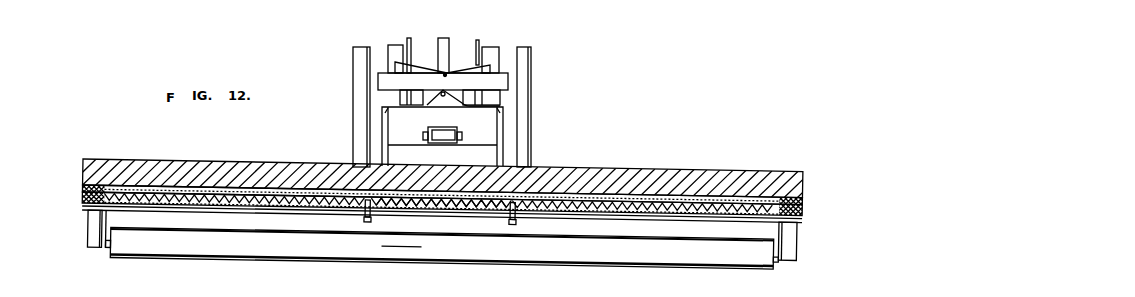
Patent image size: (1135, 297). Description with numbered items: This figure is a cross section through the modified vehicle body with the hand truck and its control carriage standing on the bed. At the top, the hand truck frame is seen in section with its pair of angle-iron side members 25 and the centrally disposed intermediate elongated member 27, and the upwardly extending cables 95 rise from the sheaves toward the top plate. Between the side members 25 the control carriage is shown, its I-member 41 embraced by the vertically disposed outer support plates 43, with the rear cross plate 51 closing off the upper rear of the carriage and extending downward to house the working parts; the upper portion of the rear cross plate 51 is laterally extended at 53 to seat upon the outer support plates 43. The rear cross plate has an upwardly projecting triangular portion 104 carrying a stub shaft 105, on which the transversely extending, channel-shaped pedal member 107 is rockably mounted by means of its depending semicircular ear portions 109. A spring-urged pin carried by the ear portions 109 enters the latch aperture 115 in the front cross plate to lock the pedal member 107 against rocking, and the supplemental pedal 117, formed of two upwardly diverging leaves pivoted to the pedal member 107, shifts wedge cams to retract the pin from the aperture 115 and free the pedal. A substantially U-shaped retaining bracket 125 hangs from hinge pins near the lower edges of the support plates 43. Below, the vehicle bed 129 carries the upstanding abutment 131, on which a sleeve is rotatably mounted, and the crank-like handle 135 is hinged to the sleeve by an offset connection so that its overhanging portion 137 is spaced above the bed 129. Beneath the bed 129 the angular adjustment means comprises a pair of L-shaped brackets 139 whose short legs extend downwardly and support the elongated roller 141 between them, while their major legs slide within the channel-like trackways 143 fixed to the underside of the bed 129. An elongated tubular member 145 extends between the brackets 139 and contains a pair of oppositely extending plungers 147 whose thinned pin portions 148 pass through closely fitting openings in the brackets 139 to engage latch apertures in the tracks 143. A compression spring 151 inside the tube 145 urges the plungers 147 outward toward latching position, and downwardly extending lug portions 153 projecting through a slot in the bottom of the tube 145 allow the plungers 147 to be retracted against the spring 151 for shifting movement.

The side members 25 is at (361, 60).
The intermediate elongated member 27 is at (444, 38).
The I-member 41 is at (396, 45).
The outer support plates 43 is at (387, 141).
The rear cross plate 51 is at (500, 116).
The laterally extended portion 53 is at (389, 115).
The upwardly extending cables 95 is at (410, 38).
The triangular portion 104 is at (432, 104).
The stub shaft 105 is at (445, 92).
The pedal member 107 is at (387, 80).
The ear portions 109 is at (400, 97).
The aperture 115 is at (448, 72).
The supplemental pedal 117 is at (510, 75).
The retaining bracket 125 is at (482, 158).
The vehicle bed 129 is at (778, 178).
The abutment 131 is at (446, 124).
The handle 135 is at (423, 136).
The overhanging portion 137 is at (462, 137).
The L-shaped brackets 139 is at (93, 233).
The roller 141 is at (744, 258).
The trackways 143 is at (90, 189).
The tubular member 145 is at (232, 205).
The plungers 147 is at (278, 200).
The pin portions 148 is at (93, 195).
The compression spring 151 is at (412, 208).
The lug portions 153 is at (366, 222).